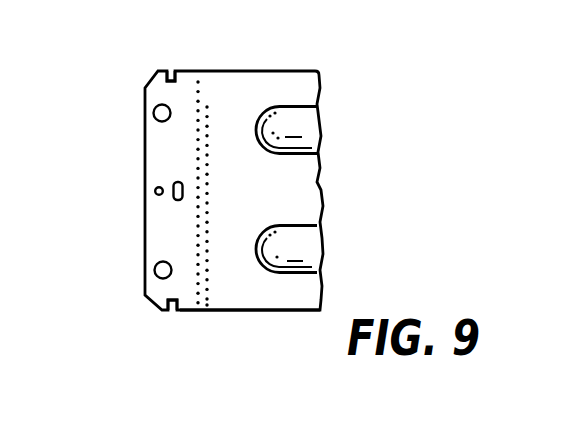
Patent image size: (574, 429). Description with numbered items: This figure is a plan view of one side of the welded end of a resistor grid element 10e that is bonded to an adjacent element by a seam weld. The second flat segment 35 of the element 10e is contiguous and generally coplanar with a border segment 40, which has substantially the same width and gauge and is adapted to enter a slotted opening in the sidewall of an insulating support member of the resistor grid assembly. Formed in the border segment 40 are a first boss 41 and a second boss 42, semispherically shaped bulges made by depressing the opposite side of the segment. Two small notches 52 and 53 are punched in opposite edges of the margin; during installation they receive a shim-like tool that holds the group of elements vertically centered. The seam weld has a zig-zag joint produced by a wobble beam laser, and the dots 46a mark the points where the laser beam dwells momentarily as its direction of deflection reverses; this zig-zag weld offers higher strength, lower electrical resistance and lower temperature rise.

The element 10e is at (320, 190).
The second flat segment 35 is at (217, 292).
The border segment 40 is at (153, 227).
The first boss 41 is at (153, 113).
The second boss 42 is at (153, 272).
The dots 46a is at (204, 98).
The notch 52 is at (171, 70).
The notch 53 is at (168, 310).